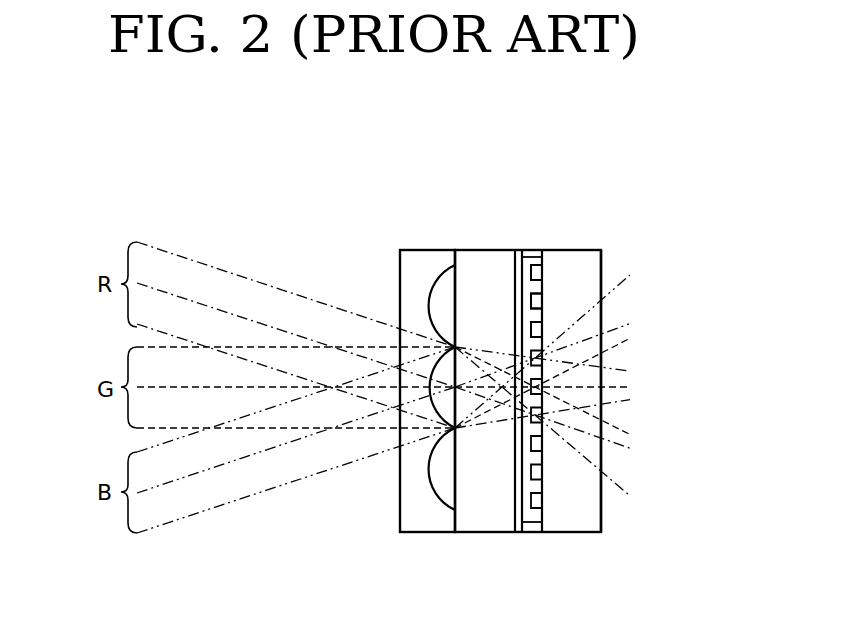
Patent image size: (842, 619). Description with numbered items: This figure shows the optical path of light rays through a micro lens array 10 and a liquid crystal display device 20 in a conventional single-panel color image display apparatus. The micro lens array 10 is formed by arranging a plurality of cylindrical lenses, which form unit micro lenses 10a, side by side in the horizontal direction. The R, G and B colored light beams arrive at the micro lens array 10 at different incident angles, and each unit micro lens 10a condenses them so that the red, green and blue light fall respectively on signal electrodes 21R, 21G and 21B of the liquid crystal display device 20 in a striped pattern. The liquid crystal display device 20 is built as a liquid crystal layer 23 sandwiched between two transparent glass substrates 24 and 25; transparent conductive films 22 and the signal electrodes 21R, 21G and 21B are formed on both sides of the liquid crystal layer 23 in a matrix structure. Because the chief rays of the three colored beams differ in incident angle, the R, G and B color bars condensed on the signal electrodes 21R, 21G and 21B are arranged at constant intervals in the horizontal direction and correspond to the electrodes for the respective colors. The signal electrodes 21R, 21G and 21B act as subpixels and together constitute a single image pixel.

The micro lens array 10 is at (401, 417).
The unit micro lens 10a is at (432, 478).
The liquid crystal display device 20 is at (562, 375).
The transparent glass substrate 24 is at (463, 256).
The transparent conductive film 22 is at (517, 256).
The liquid crystal layer 23 is at (531, 256).
The transparent glass substrate 25 is at (584, 256).
The signal electrode 21B is at (543, 272).
The signal electrode 21G is at (543, 301).
The signal electrode 21R is at (543, 329).